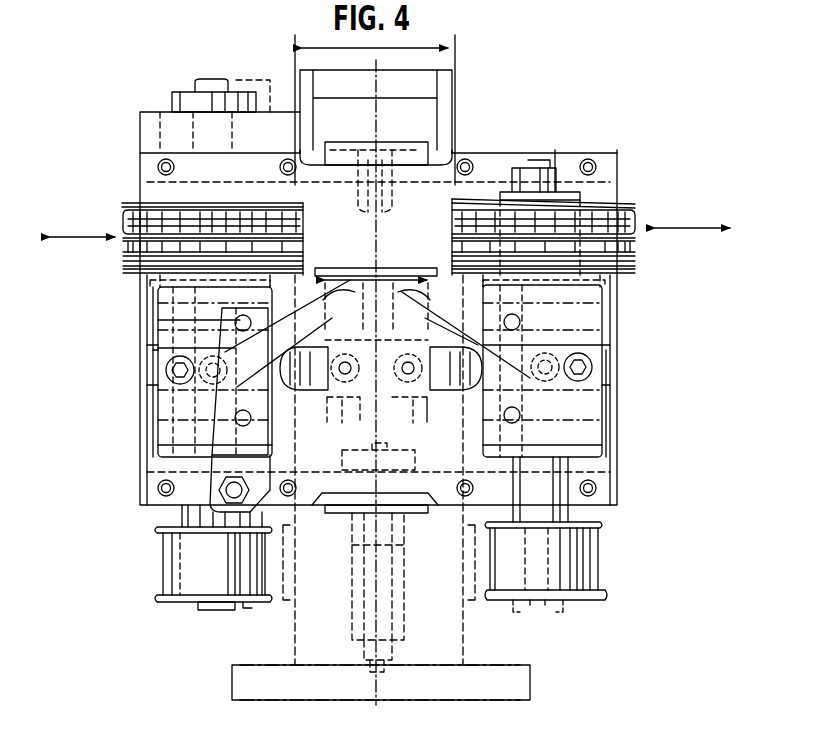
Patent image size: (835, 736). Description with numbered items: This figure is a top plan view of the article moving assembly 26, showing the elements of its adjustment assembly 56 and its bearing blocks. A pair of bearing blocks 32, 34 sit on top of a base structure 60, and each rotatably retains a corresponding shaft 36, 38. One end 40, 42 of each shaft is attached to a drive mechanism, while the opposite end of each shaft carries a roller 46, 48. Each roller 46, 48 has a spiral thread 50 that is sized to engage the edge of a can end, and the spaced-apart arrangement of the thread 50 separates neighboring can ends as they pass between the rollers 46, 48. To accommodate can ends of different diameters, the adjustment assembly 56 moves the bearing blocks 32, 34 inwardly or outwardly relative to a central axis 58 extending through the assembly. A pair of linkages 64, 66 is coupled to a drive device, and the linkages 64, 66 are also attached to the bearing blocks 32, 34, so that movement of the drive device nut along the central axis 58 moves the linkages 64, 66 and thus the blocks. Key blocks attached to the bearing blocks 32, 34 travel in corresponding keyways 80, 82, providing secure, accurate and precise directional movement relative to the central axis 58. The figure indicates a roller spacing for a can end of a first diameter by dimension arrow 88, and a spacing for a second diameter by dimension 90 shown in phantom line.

The article moving assembly 26 is at (125, 110).
The bearing block 32 is at (162, 424).
The bearing block 34 is at (605, 428).
The shaft 36 is at (145, 282).
The shaft 38 is at (620, 277).
The end of shaft 40 is at (160, 565).
The end of shaft 42 is at (600, 553).
The roller 46 is at (118, 245).
The roller 48 is at (640, 245).
The spiral thread 50 is at (125, 206).
The adjustment assembly 56 is at (128, 366).
The central axis 58 is at (385, 632).
The base structure 60 is at (148, 468).
The linkage 64 is at (304, 392).
The linkage 66 is at (457, 392).
The keyway 80 is at (155, 385).
The keyway 82 is at (610, 378).
The dimension arrow 88 is at (425, 47).
The dimension 90 is at (362, 268).